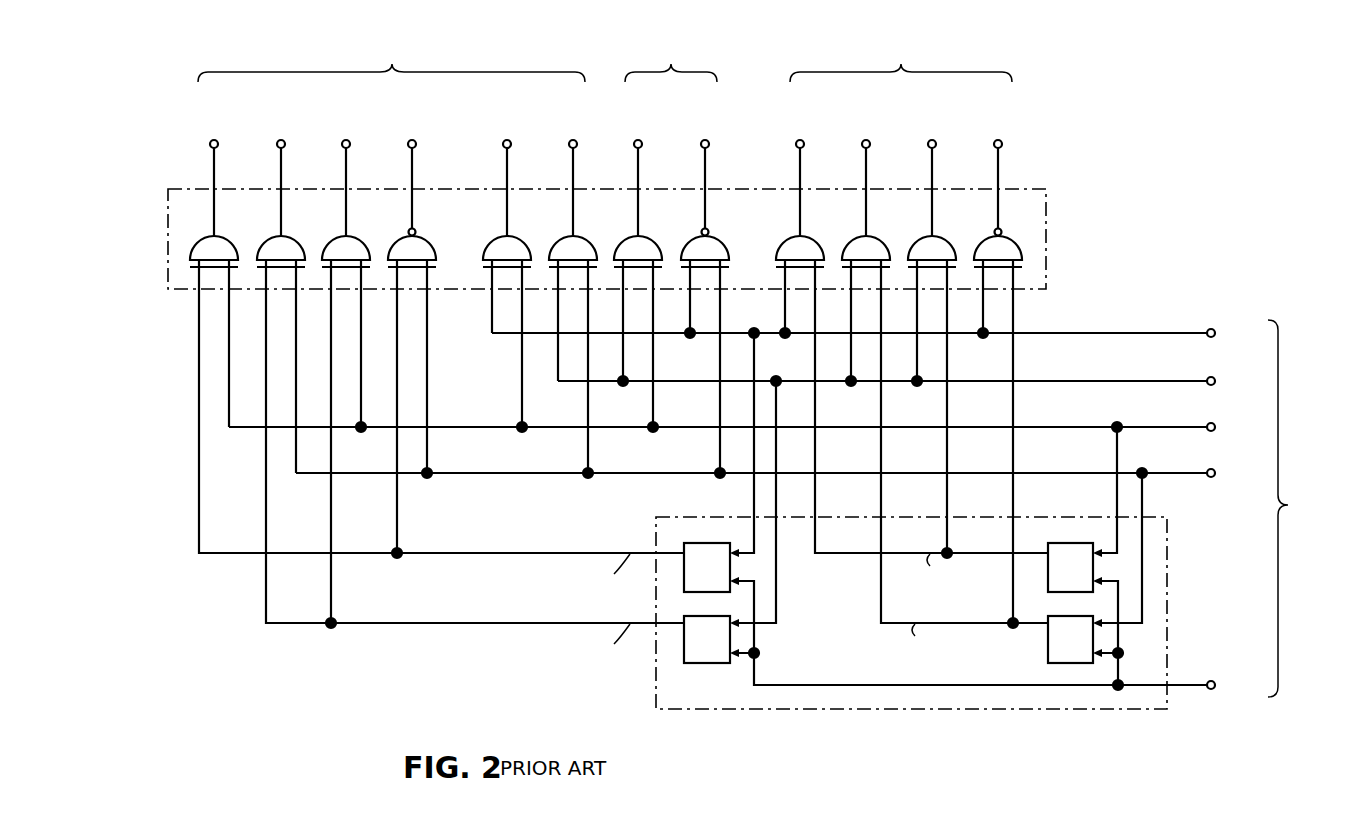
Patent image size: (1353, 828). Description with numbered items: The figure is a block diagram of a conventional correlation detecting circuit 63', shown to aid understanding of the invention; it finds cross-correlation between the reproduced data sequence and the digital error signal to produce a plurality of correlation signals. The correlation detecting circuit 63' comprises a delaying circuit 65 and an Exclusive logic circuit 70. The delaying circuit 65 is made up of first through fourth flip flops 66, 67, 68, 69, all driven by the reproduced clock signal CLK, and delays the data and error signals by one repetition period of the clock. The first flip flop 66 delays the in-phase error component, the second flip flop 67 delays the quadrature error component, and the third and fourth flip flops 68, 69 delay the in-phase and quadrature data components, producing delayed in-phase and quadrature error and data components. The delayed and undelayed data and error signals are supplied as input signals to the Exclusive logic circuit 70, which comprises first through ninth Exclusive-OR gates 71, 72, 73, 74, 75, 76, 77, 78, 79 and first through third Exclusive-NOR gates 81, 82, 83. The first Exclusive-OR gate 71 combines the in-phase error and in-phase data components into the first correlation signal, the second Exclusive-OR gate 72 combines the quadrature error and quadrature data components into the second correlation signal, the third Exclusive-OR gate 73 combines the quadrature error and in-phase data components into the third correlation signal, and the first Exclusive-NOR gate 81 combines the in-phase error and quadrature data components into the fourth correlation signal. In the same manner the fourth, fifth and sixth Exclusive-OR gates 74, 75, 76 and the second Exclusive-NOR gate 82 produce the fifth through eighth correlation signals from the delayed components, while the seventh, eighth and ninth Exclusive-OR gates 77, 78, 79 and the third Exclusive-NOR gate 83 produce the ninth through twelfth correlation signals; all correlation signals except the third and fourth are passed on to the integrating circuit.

The conventional correlation detecting circuit 63' is at (755, 375).
The delaying circuit 65 is at (656, 684).
The first flip flop 66 is at (694, 542).
The second flip flop 67 is at (683, 653).
The third flip flop 68 is at (1056, 542).
The fourth flip flop 69 is at (1047, 650).
The Exclusive logic circuit 70 is at (1047, 240).
The first Exclusive-OR gate 71 is at (511, 237).
The second Exclusive-OR gate 72 is at (577, 237).
The third Exclusive-OR gate 73 is at (642, 237).
The fourth Exclusive-OR gate 74 is at (218, 237).
The fifth Exclusive-OR gate 75 is at (285, 237).
The sixth Exclusive-OR gate 76 is at (350, 237).
The seventh Exclusive-OR gate 77 is at (804, 237).
The eighth Exclusive-OR gate 78 is at (870, 237).
The ninth Exclusive-OR gate 79 is at (936, 237).
The first Exclusive-NOR gate 81 is at (709, 237).
The second Exclusive-NOR gate 82 is at (416, 237).
The third Exclusive-NOR gate 83 is at (1002, 237).